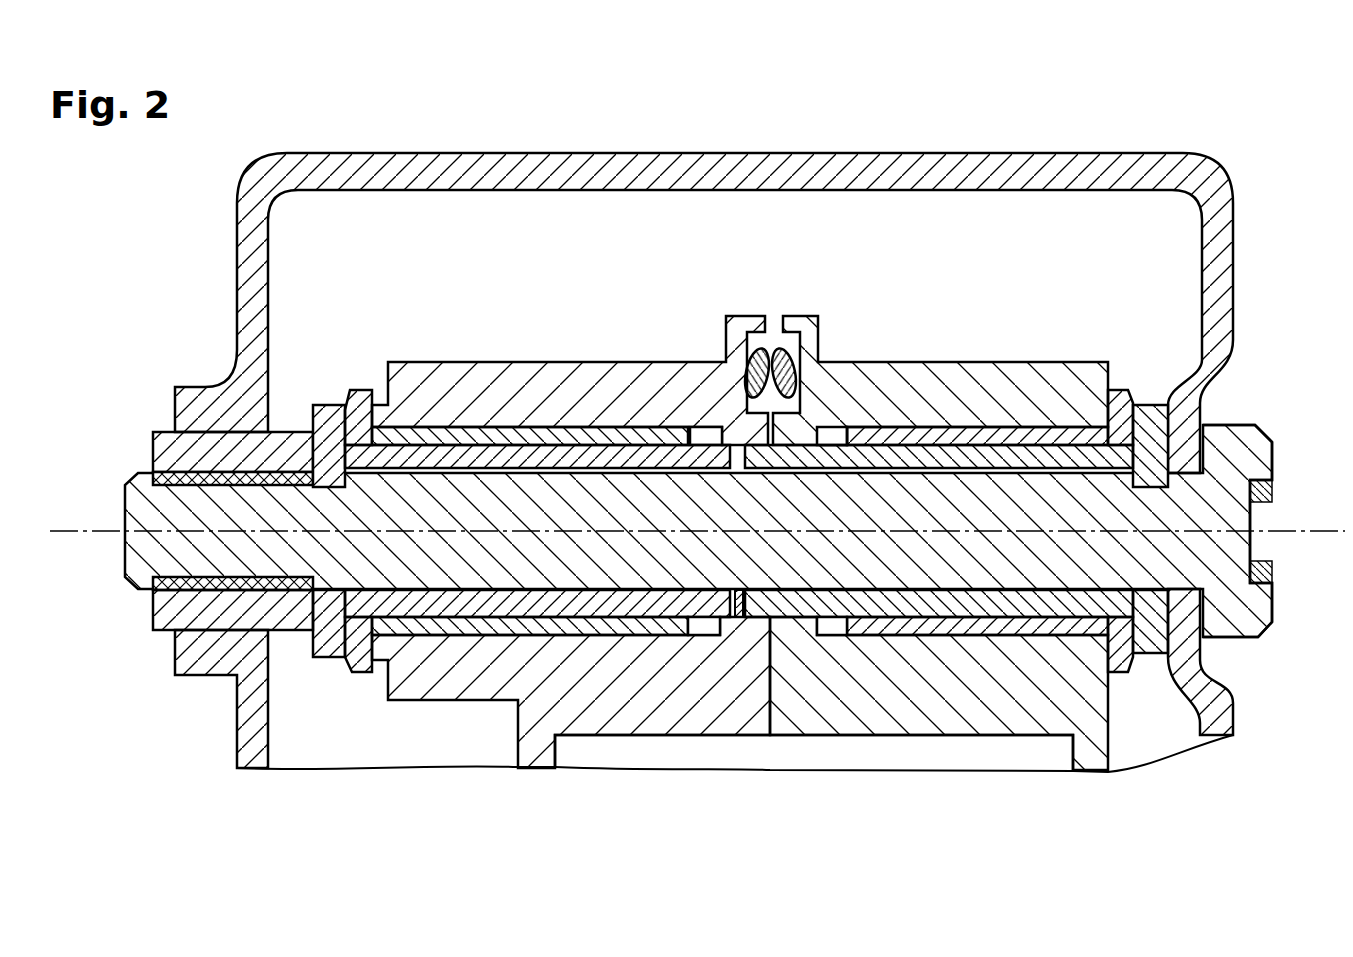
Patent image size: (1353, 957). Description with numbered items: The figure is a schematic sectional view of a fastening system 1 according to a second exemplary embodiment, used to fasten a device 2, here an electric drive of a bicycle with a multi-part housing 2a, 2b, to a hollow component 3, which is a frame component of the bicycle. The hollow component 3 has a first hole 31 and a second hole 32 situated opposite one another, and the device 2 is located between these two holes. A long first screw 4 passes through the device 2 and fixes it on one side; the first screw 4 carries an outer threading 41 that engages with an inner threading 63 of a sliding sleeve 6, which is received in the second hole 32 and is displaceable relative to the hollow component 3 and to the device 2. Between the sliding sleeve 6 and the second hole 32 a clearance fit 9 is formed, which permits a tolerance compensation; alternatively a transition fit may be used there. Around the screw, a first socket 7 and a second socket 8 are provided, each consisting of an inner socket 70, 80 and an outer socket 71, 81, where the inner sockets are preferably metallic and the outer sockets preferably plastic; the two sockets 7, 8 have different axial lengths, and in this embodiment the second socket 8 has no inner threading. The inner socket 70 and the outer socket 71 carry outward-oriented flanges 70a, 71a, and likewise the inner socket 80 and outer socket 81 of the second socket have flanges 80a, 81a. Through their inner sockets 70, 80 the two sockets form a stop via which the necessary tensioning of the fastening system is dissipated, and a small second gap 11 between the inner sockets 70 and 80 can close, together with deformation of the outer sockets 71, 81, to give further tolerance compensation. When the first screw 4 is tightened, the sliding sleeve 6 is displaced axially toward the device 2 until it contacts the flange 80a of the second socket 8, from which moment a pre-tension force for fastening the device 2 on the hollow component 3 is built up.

The fastening system 1 is at (158, 370).
The device 2 is at (798, 743).
The housing part 2a is at (614, 715).
The housing part 2b is at (885, 715).
The hollow component 3 is at (252, 720).
The first screw 4 is at (935, 492).
The sliding sleeve 6 is at (143, 430).
The first socket 7 is at (1043, 412).
The second socket 8 is at (427, 412).
The clearance fit 9 is at (213, 640).
The second gap 11 is at (740, 607).
The first hole 31 is at (1181, 594).
The second hole 32 is at (238, 625).
The outer threading 41 is at (270, 468).
The inner threading 63 is at (218, 573).
The inner socket 70 is at (976, 610).
The flange 70a is at (1153, 632).
The outer socket 71 is at (1043, 628).
The flange 71a is at (1122, 656).
The inner socket 80 is at (419, 607).
The flange 80a is at (328, 642).
The outer socket 81 is at (481, 626).
The flange 81a is at (355, 640).